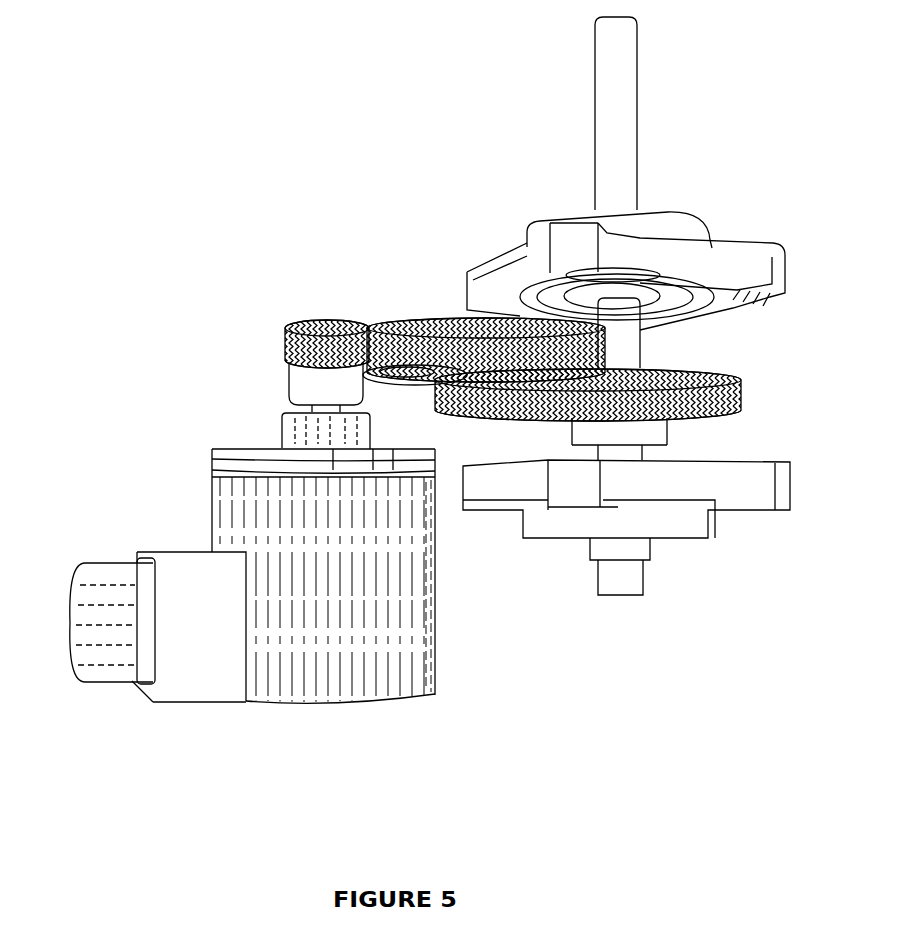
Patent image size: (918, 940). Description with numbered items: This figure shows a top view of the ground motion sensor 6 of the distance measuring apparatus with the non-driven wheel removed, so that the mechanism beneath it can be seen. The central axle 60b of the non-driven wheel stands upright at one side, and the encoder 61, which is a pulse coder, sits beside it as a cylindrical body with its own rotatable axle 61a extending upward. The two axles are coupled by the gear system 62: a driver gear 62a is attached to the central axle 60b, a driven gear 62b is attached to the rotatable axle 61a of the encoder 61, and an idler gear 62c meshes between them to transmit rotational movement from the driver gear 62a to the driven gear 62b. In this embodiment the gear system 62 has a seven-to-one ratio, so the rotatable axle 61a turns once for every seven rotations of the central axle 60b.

The ground motion sensor 6 is at (84, 86).
The central axle 60b is at (603, 77).
The encoder 61 is at (237, 457).
The rotatable axle 61a is at (310, 405).
The gear system 62 is at (337, 247).
The driver gear 62a is at (720, 380).
The driven gear 62b is at (287, 323).
The idler gear 62c is at (427, 320).